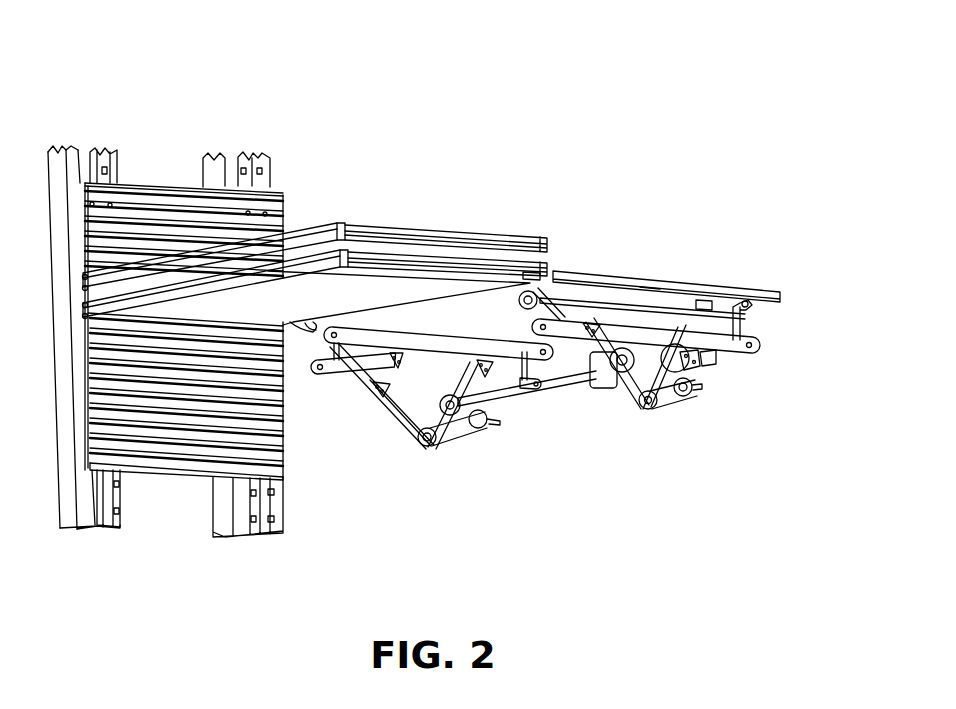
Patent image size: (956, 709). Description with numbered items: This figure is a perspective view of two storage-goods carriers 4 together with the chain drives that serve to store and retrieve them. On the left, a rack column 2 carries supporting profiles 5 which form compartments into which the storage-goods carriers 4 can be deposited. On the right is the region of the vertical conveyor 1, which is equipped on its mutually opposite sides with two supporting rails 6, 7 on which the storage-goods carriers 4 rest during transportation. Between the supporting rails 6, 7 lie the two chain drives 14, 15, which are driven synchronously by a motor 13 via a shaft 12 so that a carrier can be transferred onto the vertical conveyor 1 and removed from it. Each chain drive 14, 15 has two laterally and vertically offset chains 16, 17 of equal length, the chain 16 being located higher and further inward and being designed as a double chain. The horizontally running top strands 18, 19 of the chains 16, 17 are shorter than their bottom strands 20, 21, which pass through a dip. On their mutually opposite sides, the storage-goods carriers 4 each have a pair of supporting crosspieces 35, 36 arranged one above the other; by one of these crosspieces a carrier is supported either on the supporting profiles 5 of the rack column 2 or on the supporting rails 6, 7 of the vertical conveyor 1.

The vertical conveyor 1 is at (592, 162).
The rack column 2 is at (176, 139).
The storage-goods carrier 4 is at (318, 228).
The supporting profile 5 is at (272, 196).
The supporting rail 6 is at (312, 323).
The supporting rail 7 is at (650, 290).
The shaft 12 is at (527, 392).
The motor 13 is at (667, 358).
The chain drive 14 is at (396, 430).
The chain drive 15 is at (666, 358).
The chain 16 is at (715, 292).
The chain 17 is at (572, 315).
The top strand 18 is at (617, 294).
The top strand 19 is at (702, 298).
The bottom strand 20 is at (713, 328).
The bottom strand 21 is at (713, 360).
The supporting crosspiece 35 is at (363, 228).
The supporting crosspiece 36 is at (390, 228).